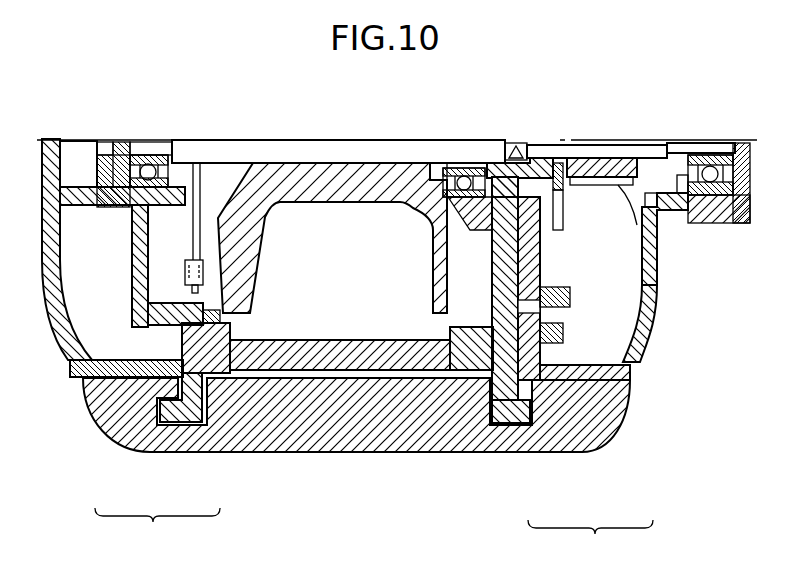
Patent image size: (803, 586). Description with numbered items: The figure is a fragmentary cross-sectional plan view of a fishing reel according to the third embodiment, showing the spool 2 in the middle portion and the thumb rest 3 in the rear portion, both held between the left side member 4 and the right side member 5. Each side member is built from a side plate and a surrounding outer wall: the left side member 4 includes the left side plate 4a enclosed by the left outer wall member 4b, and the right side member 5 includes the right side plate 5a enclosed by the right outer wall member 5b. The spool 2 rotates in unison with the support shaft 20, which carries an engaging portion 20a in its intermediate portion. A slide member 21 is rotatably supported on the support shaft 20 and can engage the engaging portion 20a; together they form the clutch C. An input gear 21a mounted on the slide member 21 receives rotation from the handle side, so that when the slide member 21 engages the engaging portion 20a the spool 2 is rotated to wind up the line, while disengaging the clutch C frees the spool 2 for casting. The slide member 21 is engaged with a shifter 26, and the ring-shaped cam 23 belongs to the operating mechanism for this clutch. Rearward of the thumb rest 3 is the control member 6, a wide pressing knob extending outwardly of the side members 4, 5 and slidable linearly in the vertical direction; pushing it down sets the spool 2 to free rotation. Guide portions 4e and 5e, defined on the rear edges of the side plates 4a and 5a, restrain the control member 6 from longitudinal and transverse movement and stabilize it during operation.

The spool 2 is at (320, 203).
The thumb rest 3 is at (365, 340).
The left side member 4 is at (157, 534).
The left side plate 4a is at (188, 425).
The left outer wall member 4b is at (68, 362).
The guide portion 4e is at (145, 395).
The right side member 5 is at (590, 545).
The right side plate 5a is at (507, 425).
The right outer wall member 5b is at (640, 365).
The guide portion 5e is at (583, 365).
The control member 6 is at (353, 452).
The support shaft 20 is at (267, 150).
The engaging portion 20a is at (515, 147).
The slide member 21 is at (540, 147).
The input gear 21a is at (657, 240).
The ring-shaped cam 23 is at (560, 220).
The shifter 26 is at (562, 172).
The clutch C is at (498, 184).